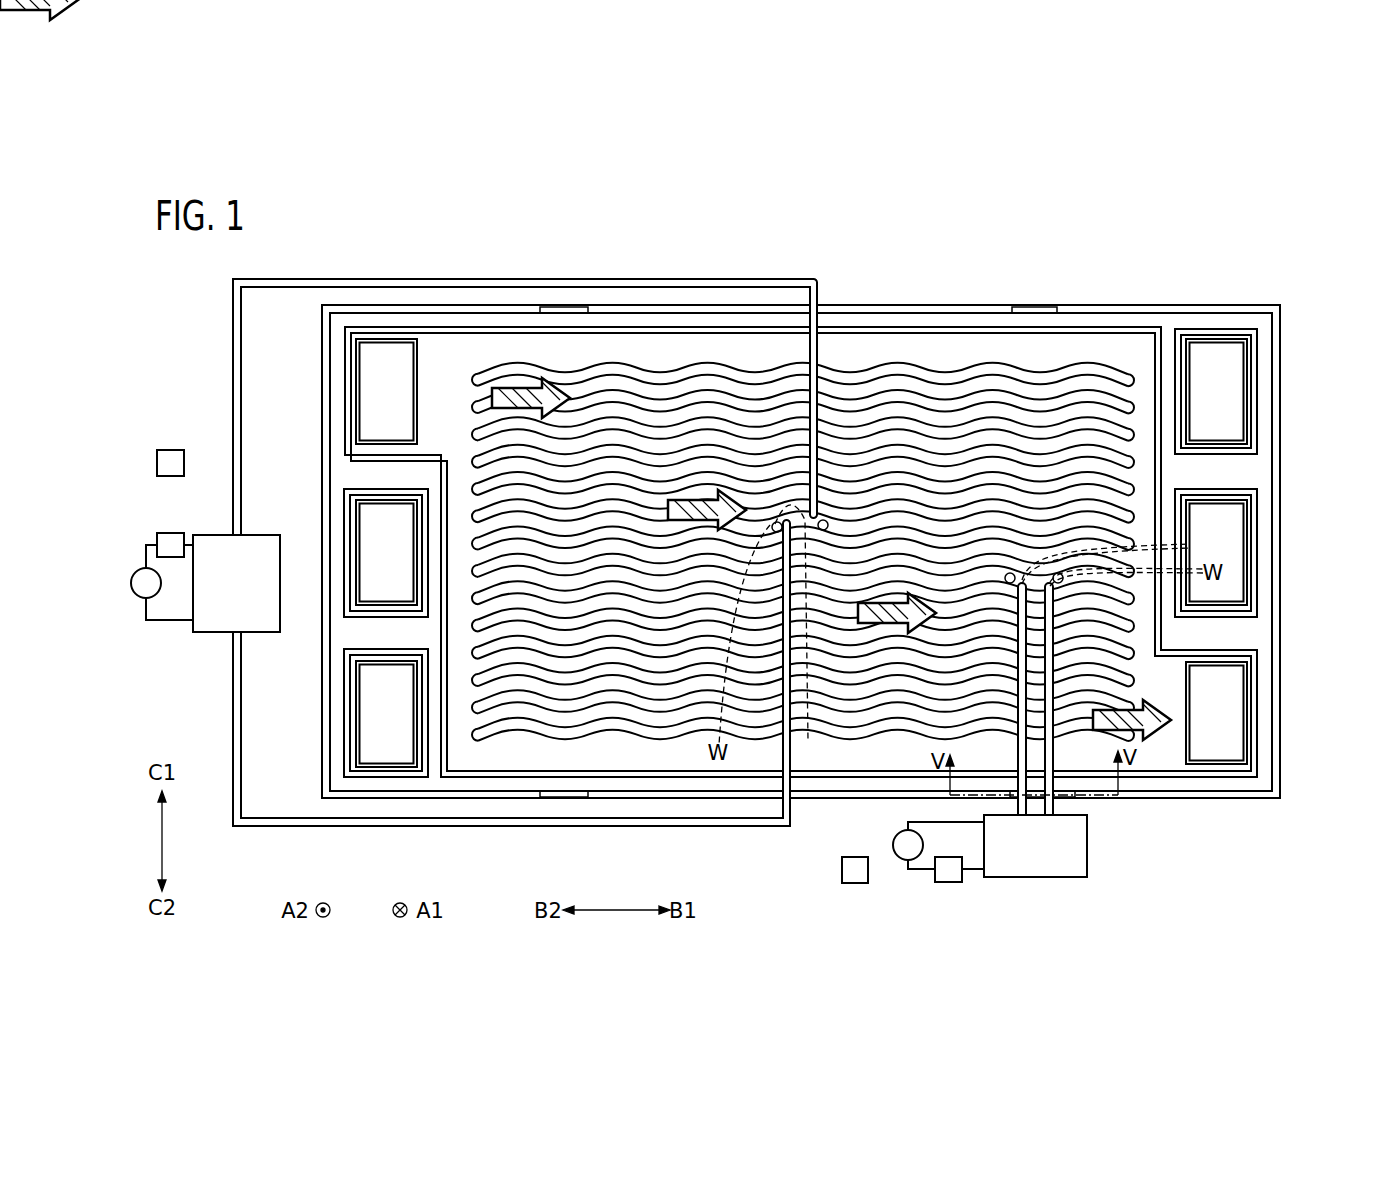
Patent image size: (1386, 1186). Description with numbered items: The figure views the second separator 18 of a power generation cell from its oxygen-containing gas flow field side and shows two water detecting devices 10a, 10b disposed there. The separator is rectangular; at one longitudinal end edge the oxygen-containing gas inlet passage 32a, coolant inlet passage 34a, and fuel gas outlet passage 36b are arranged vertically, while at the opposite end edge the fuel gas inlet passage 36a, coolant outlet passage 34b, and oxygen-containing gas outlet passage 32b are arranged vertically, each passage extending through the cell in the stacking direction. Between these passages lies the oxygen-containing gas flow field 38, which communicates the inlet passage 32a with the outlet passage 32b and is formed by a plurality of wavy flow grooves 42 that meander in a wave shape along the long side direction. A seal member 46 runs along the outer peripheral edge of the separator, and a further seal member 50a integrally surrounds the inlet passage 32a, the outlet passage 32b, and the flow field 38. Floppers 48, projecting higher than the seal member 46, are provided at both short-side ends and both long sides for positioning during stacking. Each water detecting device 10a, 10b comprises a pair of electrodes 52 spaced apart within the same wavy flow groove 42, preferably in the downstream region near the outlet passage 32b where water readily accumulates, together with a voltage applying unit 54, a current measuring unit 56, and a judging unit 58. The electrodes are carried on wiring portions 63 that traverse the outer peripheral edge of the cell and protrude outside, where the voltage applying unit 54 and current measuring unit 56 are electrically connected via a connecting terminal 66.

The second separator 18 is at (1266, 303).
The oxygen-containing gas inlet passage 32a is at (372, 385).
The oxygen-containing gas outlet passage 32b is at (1228, 697).
The coolant inlet passage 34a is at (372, 522).
The coolant outlet passage 34b is at (1228, 517).
The fuel gas inlet passage 36a is at (1228, 386).
The fuel gas outlet passage 36b is at (375, 695).
The oxygen-containing gas flow field 38 is at (663, 425).
The wavy flow grooves 42 is at (750, 725).
The seal member 46 is at (918, 305).
The flopper 48 is at (560, 306).
The seal member 50a is at (1110, 327).
The pair of electrodes 52 is at (1001, 636).
The voltage applying unit 54 is at (170, 533).
The current measuring unit 56 is at (138, 599).
The judging unit 58 is at (170, 450).
The wiring portion 63 is at (791, 279).
The connecting terminal 66 is at (221, 625).
The water detecting device 10a is at (1110, 861).
The water detecting device 10b is at (608, 671).